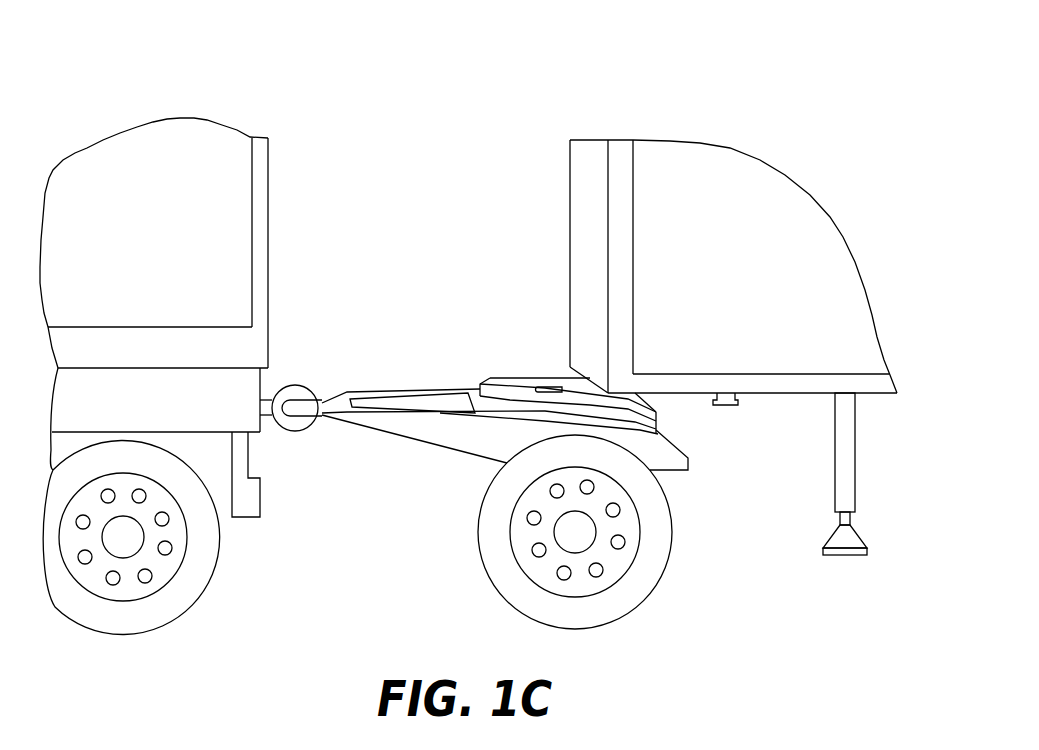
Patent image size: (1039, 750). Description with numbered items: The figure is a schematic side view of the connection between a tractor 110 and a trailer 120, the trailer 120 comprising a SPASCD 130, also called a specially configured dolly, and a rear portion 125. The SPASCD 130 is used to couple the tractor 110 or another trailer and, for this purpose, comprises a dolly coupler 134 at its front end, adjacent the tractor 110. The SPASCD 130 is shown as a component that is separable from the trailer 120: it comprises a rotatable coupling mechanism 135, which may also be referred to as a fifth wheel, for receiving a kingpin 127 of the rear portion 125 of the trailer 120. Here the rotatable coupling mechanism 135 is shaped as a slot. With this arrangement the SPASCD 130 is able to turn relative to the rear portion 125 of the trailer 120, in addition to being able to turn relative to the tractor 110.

The tractor 110 is at (100, 113).
The trailer 120 is at (512, 118).
The rear portion 125 is at (722, 148).
The kingpin 127 is at (728, 407).
The SPASCD 130 is at (465, 355).
The dolly coupler 134 is at (296, 410).
The rotatable coupling mechanism 135 is at (545, 387).